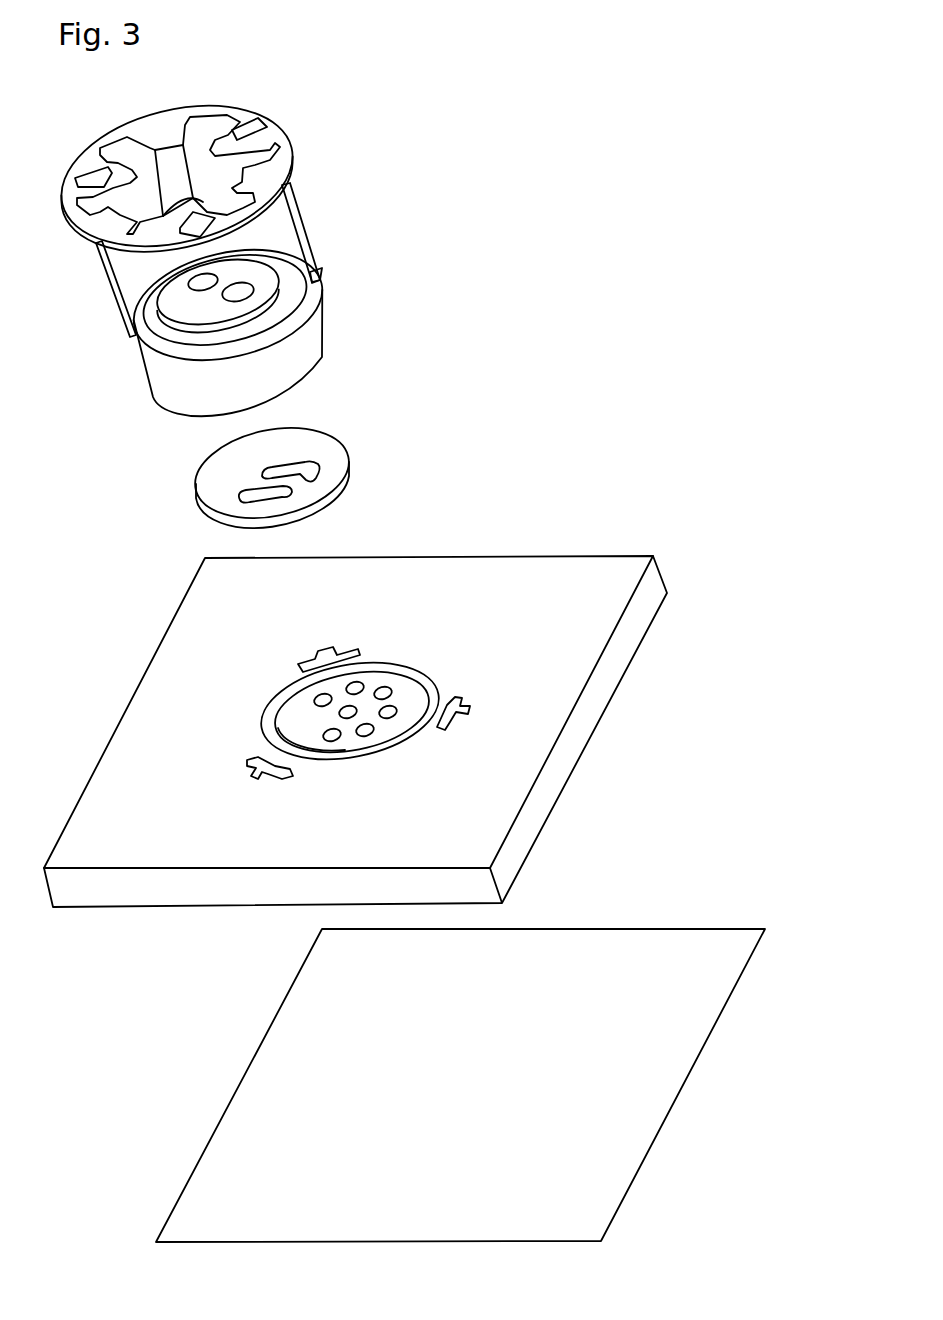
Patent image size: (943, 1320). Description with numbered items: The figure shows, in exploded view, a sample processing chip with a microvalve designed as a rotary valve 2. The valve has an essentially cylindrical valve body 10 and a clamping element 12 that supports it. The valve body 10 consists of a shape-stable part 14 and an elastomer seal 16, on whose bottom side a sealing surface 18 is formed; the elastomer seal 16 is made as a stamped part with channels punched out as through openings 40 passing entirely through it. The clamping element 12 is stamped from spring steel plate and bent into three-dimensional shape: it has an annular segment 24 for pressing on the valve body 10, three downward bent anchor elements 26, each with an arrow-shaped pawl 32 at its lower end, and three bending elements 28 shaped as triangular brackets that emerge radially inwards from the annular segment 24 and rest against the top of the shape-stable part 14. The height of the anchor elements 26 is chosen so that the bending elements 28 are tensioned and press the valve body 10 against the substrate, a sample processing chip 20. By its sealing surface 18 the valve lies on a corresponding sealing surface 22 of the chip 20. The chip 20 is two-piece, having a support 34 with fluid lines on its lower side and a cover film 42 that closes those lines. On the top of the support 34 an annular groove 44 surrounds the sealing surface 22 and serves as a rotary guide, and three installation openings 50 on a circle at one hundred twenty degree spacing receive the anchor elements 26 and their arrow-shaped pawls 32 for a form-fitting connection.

The rotary valve 2 is at (591, 134).
The valve body 10 is at (555, 253).
The clamping element 12 is at (233, 155).
The shape-stable part 14 is at (310, 318).
The elastomer seal 16 is at (351, 465).
The sealing surface 18 is at (337, 515).
The sample processing chip 20 is at (815, 1008).
The sealing surface 22 is at (407, 692).
The annular segment 24 is at (213, 110).
The anchor elements 26 is at (305, 205).
The bending elements 28 is at (288, 141).
The arrow-shaped pawl 32 is at (323, 268).
The support 34 is at (659, 573).
The through opening 40 is at (277, 477).
The cover film 42 is at (622, 941).
The annular groove 44 is at (381, 664).
The installation openings 50 is at (273, 778).